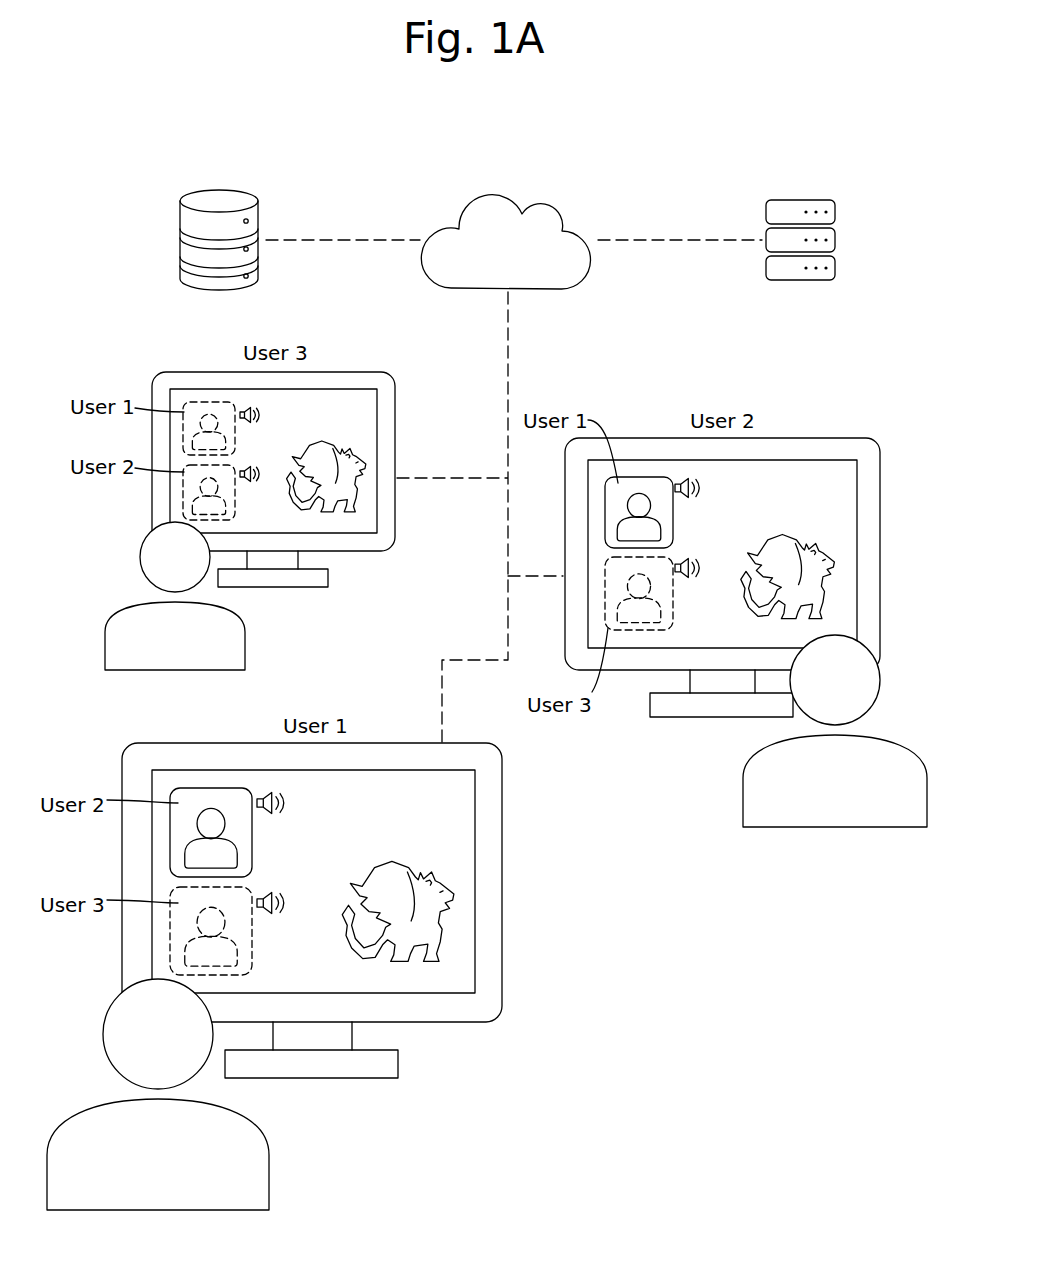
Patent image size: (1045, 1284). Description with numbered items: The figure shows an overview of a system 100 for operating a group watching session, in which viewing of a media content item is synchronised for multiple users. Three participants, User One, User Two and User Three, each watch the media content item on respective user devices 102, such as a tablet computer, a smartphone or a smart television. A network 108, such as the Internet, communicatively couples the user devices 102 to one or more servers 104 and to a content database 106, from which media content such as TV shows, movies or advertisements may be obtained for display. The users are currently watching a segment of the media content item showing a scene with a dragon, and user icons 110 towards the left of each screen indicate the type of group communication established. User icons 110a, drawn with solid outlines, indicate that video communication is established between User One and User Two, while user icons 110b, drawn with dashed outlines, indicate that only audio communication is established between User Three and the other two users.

The system 100 is at (186, 104).
The user device 102 is at (380, 362).
The server 104 is at (812, 190).
The content database 106 is at (194, 188).
The network 108 is at (490, 193).
The user icon 110 is at (382, 719).
The user icon 110a is at (638, 477).
The user icon 110b is at (205, 402).